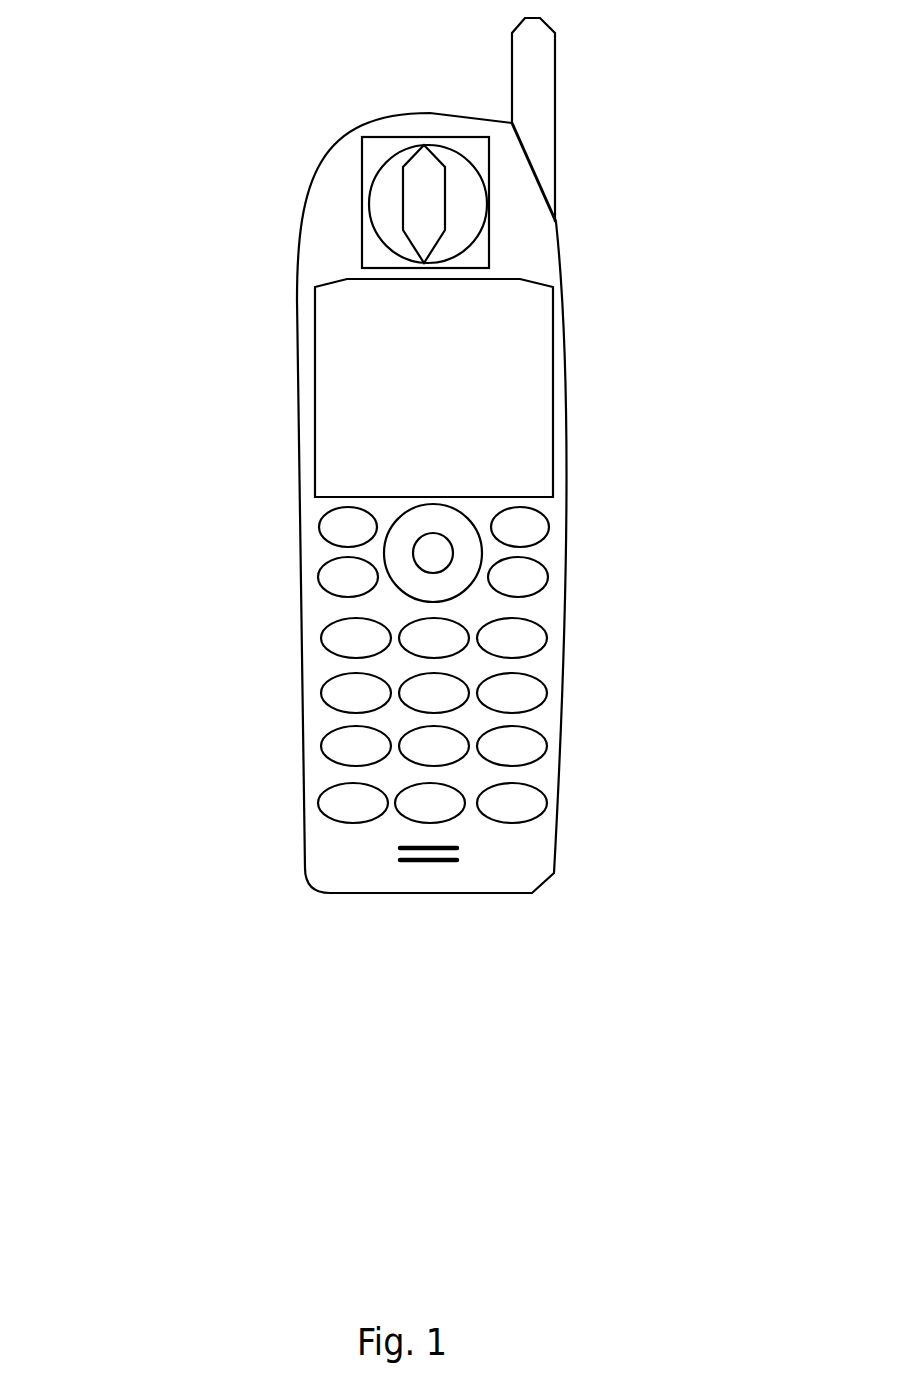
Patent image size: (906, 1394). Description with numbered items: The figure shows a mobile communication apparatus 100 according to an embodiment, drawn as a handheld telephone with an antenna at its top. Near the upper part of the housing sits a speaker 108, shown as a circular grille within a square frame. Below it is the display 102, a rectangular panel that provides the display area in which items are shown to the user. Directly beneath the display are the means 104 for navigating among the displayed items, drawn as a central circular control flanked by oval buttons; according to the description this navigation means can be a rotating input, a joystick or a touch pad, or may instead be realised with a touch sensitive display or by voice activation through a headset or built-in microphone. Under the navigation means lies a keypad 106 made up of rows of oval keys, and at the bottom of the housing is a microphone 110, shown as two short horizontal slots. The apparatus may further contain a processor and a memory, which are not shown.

The mobile communication apparatus 100 is at (320, 605).
The display 102 is at (523, 392).
The means for navigating among items 104 is at (435, 563).
The keypad 106 is at (395, 692).
The speaker 108 is at (425, 210).
The microphone 110 is at (407, 860).